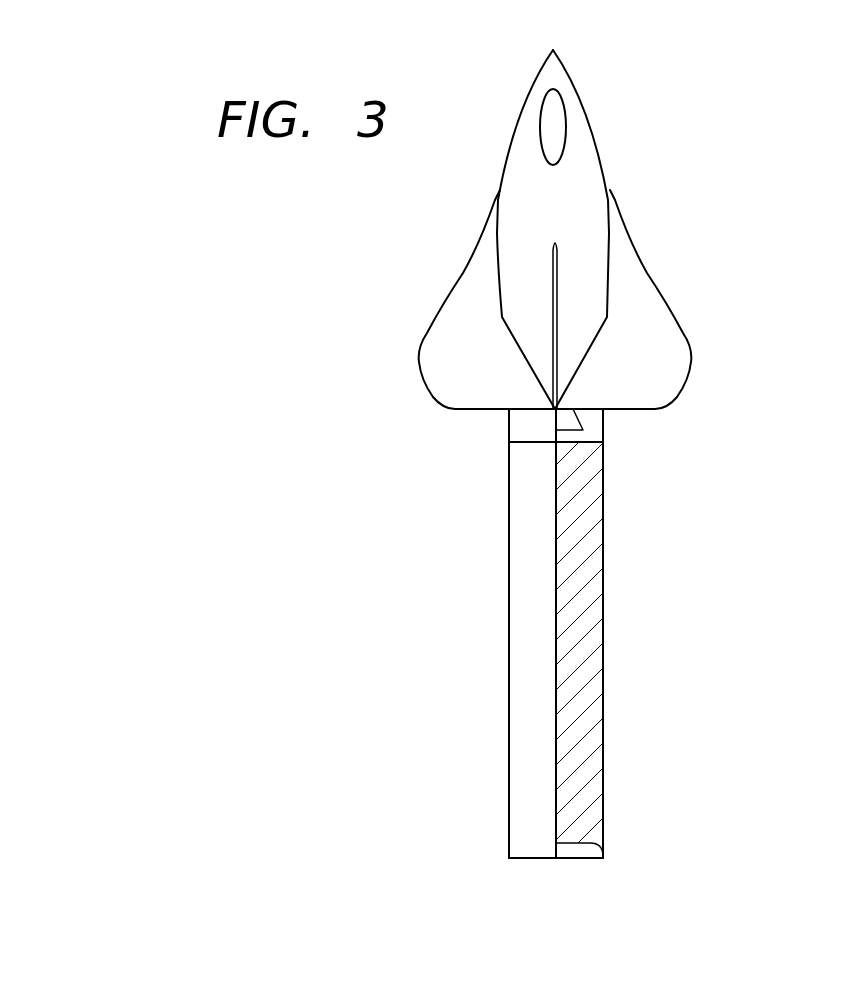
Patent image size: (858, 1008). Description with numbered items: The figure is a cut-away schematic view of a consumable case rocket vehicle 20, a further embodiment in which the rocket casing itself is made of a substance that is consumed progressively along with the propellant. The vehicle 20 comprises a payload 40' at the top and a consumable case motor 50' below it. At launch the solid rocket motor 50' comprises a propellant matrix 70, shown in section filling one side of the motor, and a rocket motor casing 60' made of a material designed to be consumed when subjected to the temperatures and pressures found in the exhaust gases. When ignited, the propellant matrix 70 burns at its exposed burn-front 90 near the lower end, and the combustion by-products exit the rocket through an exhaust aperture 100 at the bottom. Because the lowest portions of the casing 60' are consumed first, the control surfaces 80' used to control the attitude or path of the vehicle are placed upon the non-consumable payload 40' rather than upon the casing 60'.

The consumable case rocket vehicle 20 is at (797, 856).
The payload 40' is at (549, 244).
The consumable case motor 50' is at (582, 656).
The rocket motor casing 60' is at (500, 633).
The propellant matrix 70 is at (573, 546).
The control surfaces 80' is at (511, 299).
The exposed burn-front 90 is at (573, 846).
The exhaust aperture 100 is at (533, 858).